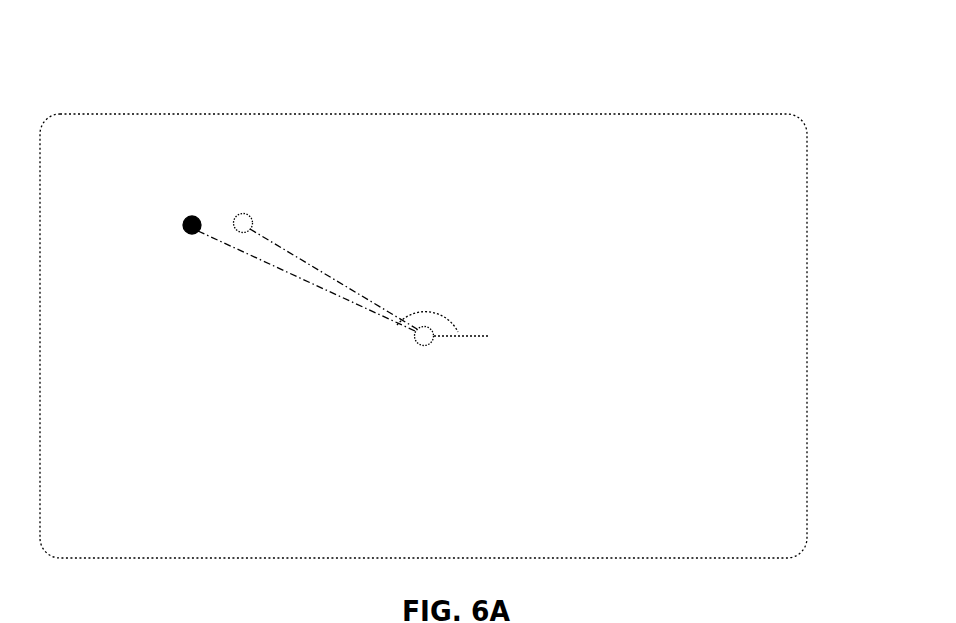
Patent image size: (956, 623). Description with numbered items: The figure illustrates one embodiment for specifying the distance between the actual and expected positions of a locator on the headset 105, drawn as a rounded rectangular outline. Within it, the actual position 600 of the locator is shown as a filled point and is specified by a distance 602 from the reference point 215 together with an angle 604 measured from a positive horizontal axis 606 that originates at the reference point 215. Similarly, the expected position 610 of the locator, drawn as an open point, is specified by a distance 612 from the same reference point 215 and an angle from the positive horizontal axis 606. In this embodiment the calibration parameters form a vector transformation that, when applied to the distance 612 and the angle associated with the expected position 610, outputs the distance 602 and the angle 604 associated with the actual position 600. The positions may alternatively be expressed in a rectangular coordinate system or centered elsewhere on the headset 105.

The headset 105 is at (735, 114).
The actual position 600 is at (190, 216).
The expected position 610 is at (246, 211).
The distance 602 is at (308, 282).
The distance 612 is at (332, 280).
The reference point 215 is at (420, 344).
The angle 604 is at (458, 330).
The positive horizontal axis 606 is at (478, 340).